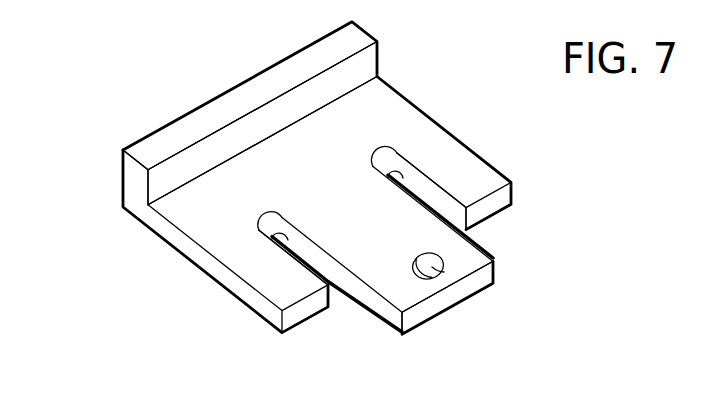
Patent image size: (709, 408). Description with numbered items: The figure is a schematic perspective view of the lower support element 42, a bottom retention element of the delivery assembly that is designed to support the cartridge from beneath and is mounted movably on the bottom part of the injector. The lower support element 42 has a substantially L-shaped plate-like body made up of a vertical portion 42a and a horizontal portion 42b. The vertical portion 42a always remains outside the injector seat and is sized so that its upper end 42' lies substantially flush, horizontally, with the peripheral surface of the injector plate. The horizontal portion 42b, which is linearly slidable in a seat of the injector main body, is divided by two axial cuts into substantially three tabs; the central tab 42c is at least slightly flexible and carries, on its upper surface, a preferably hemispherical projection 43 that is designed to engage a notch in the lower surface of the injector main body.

The lower support element 42 is at (317, 178).
The upper end of the vertical portion 42' is at (247, 123).
The vertical portion 42a is at (135, 178).
The horizontal portion 42b is at (440, 120).
The central tab 42c is at (397, 306).
The projection 43 is at (468, 257).